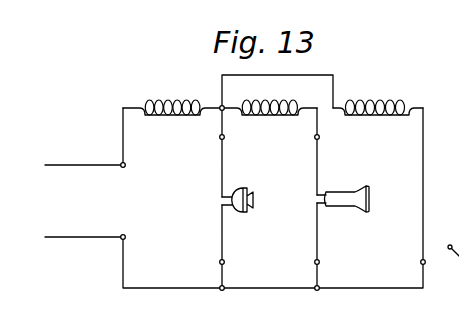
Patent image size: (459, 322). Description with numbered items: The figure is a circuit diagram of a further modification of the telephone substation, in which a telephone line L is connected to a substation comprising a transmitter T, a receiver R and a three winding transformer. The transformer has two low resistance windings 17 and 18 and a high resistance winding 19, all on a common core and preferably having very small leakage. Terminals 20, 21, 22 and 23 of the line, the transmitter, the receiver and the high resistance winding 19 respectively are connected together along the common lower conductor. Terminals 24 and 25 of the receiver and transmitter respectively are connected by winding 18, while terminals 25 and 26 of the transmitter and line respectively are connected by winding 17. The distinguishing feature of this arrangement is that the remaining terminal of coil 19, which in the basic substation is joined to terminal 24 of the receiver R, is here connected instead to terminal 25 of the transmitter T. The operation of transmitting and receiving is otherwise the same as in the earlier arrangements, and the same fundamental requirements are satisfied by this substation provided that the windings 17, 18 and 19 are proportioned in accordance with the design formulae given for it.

The low resistance winding 17 is at (172, 118).
The low resistance winding 18 is at (269, 118).
The high resistance winding 19 is at (378, 118).
The line terminal 20 is at (125, 238).
The transmitter terminal 21 is at (224, 264).
The receiver terminal 22 is at (315, 264).
The high resistance winding terminal 23 is at (421, 264).
The receiver terminal 24 is at (318, 139).
The transmitter terminal 25 is at (223, 139).
The line terminal 26 is at (125, 167).
The telephone line L is at (55, 198).
The transmitter T is at (254, 198).
The receiver R is at (370, 199).